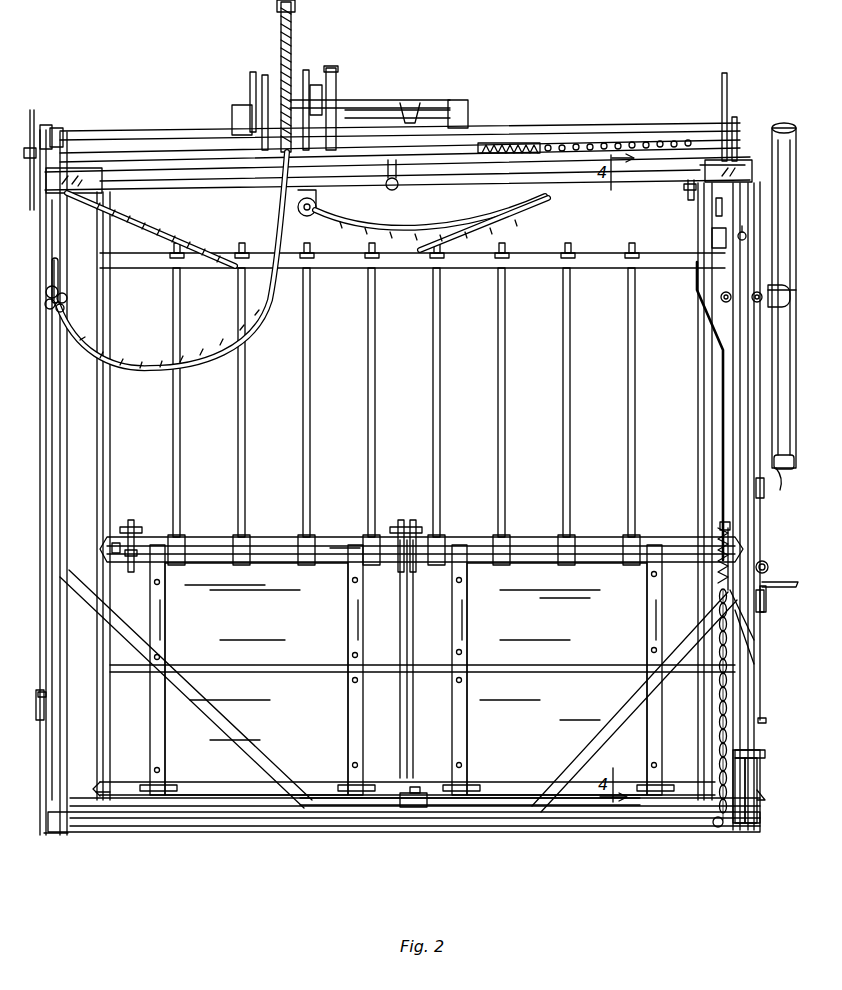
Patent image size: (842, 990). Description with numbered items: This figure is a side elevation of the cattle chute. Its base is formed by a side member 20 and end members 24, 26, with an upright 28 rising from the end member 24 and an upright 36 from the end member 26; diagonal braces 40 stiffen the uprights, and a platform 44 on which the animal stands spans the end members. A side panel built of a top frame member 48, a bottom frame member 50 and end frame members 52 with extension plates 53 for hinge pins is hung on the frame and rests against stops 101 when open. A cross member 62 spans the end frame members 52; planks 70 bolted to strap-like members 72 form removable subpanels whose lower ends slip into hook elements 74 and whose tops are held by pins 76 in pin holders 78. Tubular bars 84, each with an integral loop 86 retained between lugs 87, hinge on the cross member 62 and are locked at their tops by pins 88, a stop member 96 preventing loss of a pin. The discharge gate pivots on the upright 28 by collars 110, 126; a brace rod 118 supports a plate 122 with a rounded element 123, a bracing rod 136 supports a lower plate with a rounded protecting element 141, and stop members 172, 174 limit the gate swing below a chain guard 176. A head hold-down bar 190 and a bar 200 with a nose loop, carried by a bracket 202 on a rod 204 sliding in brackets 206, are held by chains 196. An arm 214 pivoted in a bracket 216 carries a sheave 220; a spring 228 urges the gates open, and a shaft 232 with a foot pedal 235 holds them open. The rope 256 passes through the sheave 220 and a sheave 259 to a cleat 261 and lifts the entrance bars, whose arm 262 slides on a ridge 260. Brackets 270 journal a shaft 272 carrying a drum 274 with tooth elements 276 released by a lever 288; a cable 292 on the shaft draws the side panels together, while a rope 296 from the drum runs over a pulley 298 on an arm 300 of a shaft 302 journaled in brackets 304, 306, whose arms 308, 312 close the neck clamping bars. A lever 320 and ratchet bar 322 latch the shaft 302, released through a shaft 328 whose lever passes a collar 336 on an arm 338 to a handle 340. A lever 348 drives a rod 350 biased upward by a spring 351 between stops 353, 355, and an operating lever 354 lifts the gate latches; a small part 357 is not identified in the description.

The side member 20 is at (335, 820).
The end member 24 is at (760, 818).
The end member 26 is at (58, 832).
The upright 28 is at (743, 368).
The upright 36 is at (60, 445).
The diagonal brace 40 is at (250, 785).
The platform 44 is at (80, 802).
The top frame member 48 is at (530, 158).
The bottom frame member 50 is at (303, 786).
The end frame member 52 is at (110, 444).
The extension plate 53 is at (95, 786).
The cross member 62 is at (532, 546).
The wooden plank 70 is at (262, 765).
The strap-like member 72 is at (155, 758).
The hook element 74 is at (160, 790).
The pin 76 is at (131, 534).
The pin holder 78 is at (126, 548).
The tubular bar 84 is at (248, 402).
The integral loop 86 is at (322, 550).
The lug 87 is at (296, 532).
The pin 88 is at (575, 253).
The stop member 96 is at (565, 243).
The stop 101 is at (88, 170).
The collar 110 is at (716, 222).
The brace rod 118 is at (768, 292).
The plate 122 is at (721, 297).
The rounded element 123 is at (752, 300).
The collar 126 is at (760, 792).
The bracing rod 136 is at (768, 566).
The rounded protecting element 141 is at (740, 610).
The stop member 172 is at (755, 784).
The stop member 174 is at (745, 770).
The chain guard 176 is at (748, 751).
The head hold-down bar 190 is at (782, 470).
The chain 196 is at (735, 700).
The bar 200 is at (768, 586).
The bracket 202 is at (764, 604).
The rod 204 is at (761, 514).
The bracket 206 is at (764, 494).
The arm 214 is at (622, 148).
The bracket 216 is at (738, 236).
The sheave 220 is at (612, 156).
The spring 228 is at (512, 143).
The shaft 232 is at (466, 805).
The foot pedal 235 is at (414, 807).
The rope 256 is at (134, 230).
The sheave 259 is at (310, 216).
The ridge 260 is at (44, 722).
The cleat 261 is at (58, 278).
The arm 262 is at (48, 697).
The bracket 270 is at (232, 120).
The shaft 272 is at (465, 112).
The drum 274 is at (265, 76).
The tooth element 276 is at (315, 85).
The lever 288 is at (332, 70).
The cable 292 is at (432, 110).
The rope 296 is at (262, 100).
The pulley 298 is at (278, 20).
The arm 300 is at (277, 47).
The shaft 302 is at (140, 140).
The bracket 304 is at (58, 137).
The bracket 306 is at (736, 118).
The arm 308 is at (728, 88).
The arm 312 is at (725, 118).
The lever 320 is at (42, 126).
The ratchet bar 322 is at (32, 112).
The shaft 328 is at (172, 153).
The collar 336 is at (340, 70).
The arm 338 is at (345, 100).
The handle 340 is at (408, 108).
The lever 348 is at (690, 180).
The rod 350 is at (697, 272).
The spring 351 is at (730, 548).
The stop 353 is at (745, 640).
The operating lever 354 is at (396, 190).
The stop 355 is at (730, 530).
The stop 357 is at (766, 720).